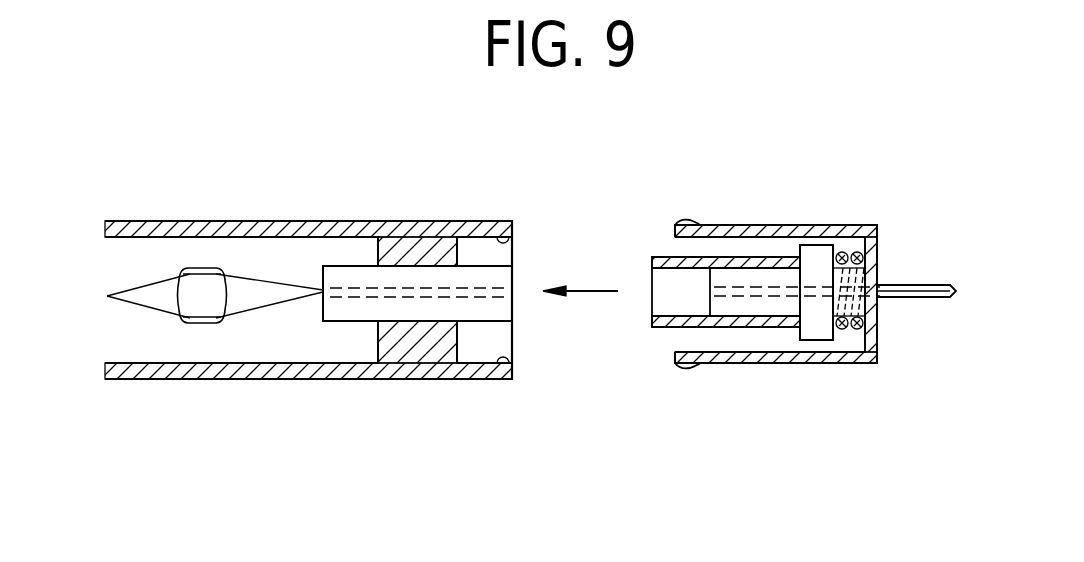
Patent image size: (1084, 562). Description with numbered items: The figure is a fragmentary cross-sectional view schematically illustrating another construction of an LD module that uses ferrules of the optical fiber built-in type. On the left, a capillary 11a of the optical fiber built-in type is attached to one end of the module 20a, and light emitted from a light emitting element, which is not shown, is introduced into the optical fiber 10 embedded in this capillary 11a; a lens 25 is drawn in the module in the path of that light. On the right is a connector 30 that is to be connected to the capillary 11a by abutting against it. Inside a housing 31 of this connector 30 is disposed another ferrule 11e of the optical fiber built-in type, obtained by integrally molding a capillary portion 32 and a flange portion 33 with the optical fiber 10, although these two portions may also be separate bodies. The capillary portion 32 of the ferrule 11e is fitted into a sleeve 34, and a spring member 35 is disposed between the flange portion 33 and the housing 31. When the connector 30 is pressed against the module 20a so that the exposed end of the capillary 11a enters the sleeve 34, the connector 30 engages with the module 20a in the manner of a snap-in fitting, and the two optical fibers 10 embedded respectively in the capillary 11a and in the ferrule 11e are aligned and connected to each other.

The module 20a is at (308, 220).
The lens 25 is at (199, 267).
The capillary 11a is at (352, 322).
The optical fiber 10 is at (502, 292).
The connector 30 is at (768, 223).
The housing 31 is at (705, 224).
The capillary portion 32 is at (757, 318).
The flange portion 33 is at (820, 244).
The sleeve 34 is at (663, 258).
The spring member 35 is at (848, 251).
The ferrule 11e is at (840, 340).